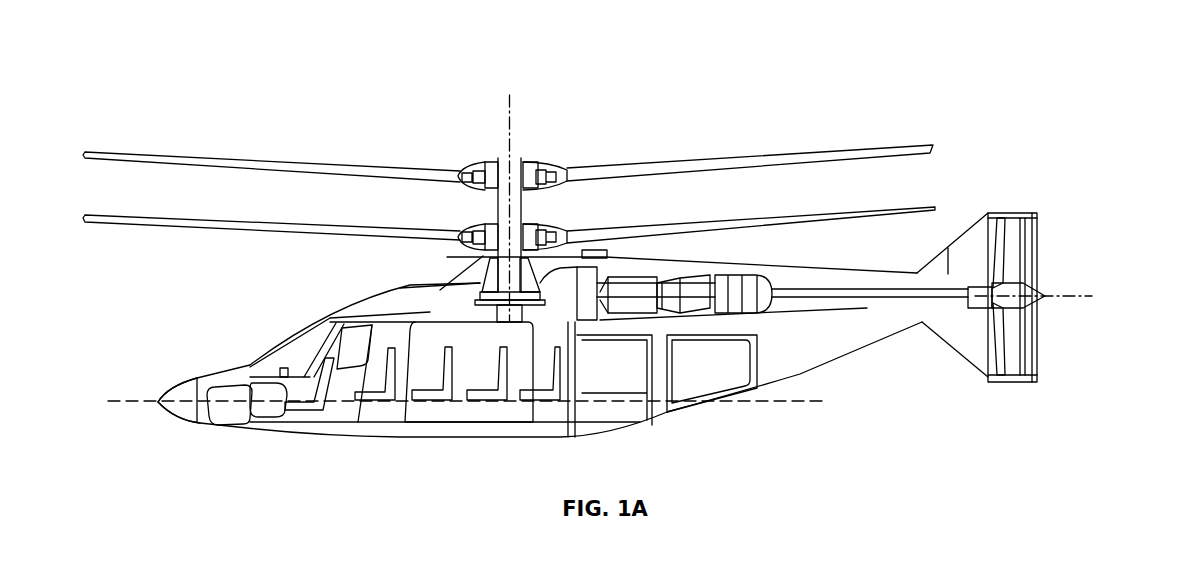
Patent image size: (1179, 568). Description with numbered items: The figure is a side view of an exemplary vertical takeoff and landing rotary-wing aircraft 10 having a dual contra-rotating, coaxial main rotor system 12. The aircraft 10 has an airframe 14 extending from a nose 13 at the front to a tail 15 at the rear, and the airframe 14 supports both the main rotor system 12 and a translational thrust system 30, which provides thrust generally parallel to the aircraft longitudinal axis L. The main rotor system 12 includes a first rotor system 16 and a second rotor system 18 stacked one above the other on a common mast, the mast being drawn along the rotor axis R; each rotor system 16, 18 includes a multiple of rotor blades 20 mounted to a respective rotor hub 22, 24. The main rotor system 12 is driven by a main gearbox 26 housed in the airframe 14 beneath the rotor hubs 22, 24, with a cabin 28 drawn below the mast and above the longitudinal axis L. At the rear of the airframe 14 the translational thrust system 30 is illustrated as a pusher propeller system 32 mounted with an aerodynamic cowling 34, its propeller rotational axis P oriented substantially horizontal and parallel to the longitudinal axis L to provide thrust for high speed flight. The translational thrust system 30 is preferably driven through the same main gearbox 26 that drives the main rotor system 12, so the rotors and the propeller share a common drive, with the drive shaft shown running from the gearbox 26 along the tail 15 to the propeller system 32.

The rotary-wing aircraft 10 is at (360, 88).
The main rotor system 12 is at (553, 158).
The nose 13 is at (178, 413).
The airframe 14 is at (367, 305).
The tail 15 is at (900, 320).
The first rotor system 16 is at (483, 160).
The second rotor system 18 is at (550, 220).
The rotor blades 20 is at (685, 165).
The rotor hub 22 is at (528, 164).
The rotor hub 24 is at (483, 226).
The main gearbox 26 is at (478, 283).
The cabin 28 is at (423, 417).
The translational thrust system 30 is at (1041, 212).
The pusher propeller system 32 is at (1003, 258).
The aerodynamic cowling 34 is at (1001, 213).
The rotor axis R is at (507, 112).
The aircraft longitudinal axis L is at (762, 402).
The propeller rotational axis P is at (1045, 327).